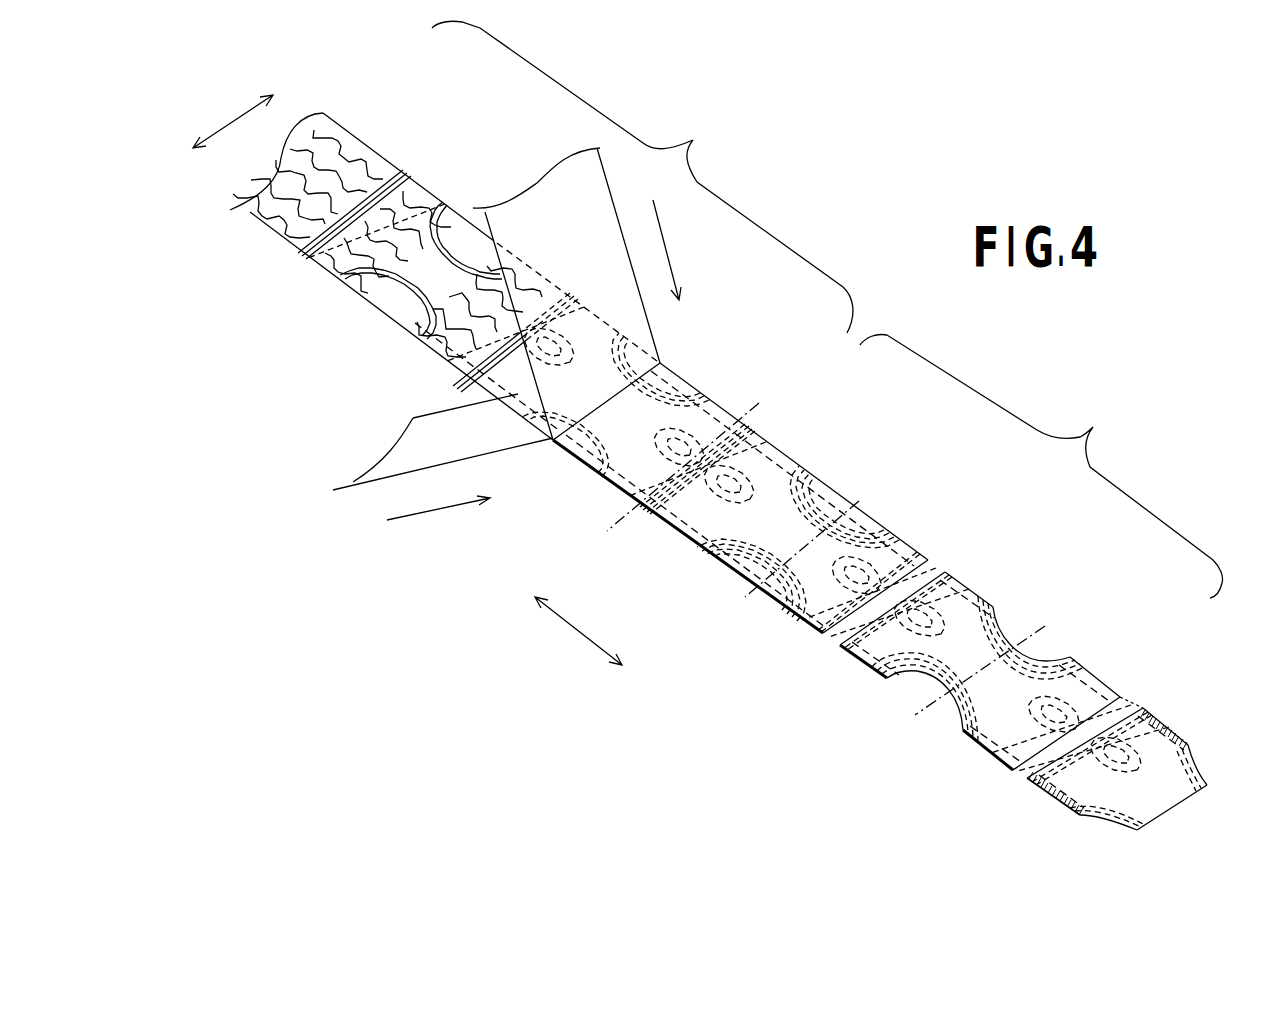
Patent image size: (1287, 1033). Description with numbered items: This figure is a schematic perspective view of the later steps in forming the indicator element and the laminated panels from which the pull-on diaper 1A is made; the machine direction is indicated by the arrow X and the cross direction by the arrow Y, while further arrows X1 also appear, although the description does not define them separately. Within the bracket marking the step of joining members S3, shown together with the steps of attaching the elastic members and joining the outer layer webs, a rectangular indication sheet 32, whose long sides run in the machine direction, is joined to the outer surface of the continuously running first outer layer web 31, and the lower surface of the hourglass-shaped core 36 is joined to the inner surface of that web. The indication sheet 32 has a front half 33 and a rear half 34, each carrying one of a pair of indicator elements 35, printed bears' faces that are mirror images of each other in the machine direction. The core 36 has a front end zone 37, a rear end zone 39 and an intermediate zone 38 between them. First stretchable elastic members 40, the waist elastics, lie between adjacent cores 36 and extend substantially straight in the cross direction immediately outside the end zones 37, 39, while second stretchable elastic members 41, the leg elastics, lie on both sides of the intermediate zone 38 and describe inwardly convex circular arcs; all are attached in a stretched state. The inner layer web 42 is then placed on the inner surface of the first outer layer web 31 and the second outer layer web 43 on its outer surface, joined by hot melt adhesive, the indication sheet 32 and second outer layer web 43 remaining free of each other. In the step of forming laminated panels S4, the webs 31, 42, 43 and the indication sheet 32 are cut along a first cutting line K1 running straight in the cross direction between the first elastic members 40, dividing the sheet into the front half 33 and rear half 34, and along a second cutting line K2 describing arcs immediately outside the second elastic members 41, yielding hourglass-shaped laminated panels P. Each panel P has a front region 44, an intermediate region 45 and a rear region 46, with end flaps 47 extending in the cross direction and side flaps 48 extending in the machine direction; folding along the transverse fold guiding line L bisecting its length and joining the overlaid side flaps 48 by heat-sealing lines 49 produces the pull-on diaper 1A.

The pull-on diaper 1A is at (1221, 675).
The first outer layer web 31 is at (345, 148).
The indication sheet 32 is at (322, 262).
The front half 33 is at (680, 528).
The rear half 34 is at (607, 483).
The indicator elements 35 is at (713, 398).
The core 36 is at (416, 190).
The front end zone 37 is at (440, 340).
The intermediate zone 38 is at (410, 320).
The rear end zone 39 is at (365, 283).
The first stretchable elastic members 40 is at (296, 246).
The second stretchable elastic members 41 is at (458, 217).
The inner layer web 42 is at (592, 202).
The second outer layer web 43 is at (403, 443).
The front region 44 is at (965, 733).
The intermediate region 45 is at (985, 645).
The rear region 46 is at (847, 663).
The end flaps 47 is at (843, 656).
The side flaps 48 is at (917, 693).
The heat-sealing lines 49 is at (1152, 715).
The first cutting line K1 is at (786, 405).
The second cutting line K2 is at (865, 507).
The transverse fold guiding line L is at (1040, 622).
The laminated panel P is at (1120, 695).
The step of joining members S3 is at (642, 177).
The step of forming laminated panels S4 is at (1041, 466).
The arrow indicating machine direction X is at (578, 631).
The conveying direction X1 is at (663, 232).
The arrow indicating cross direction Y is at (243, 112).